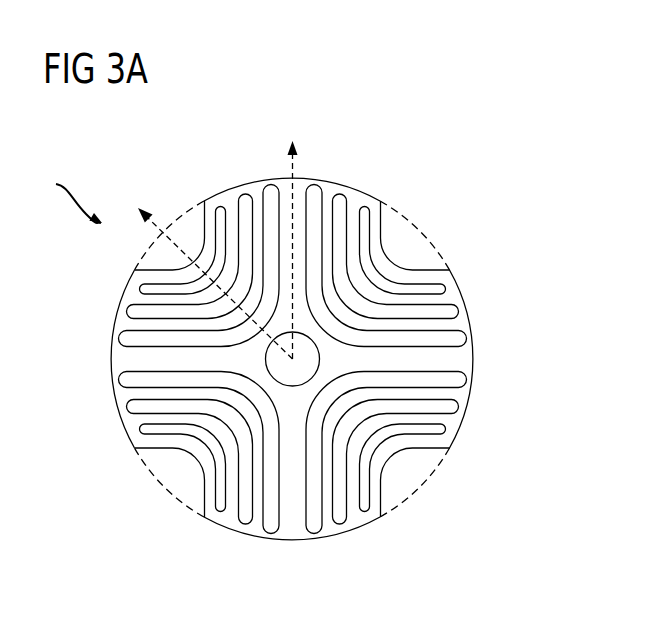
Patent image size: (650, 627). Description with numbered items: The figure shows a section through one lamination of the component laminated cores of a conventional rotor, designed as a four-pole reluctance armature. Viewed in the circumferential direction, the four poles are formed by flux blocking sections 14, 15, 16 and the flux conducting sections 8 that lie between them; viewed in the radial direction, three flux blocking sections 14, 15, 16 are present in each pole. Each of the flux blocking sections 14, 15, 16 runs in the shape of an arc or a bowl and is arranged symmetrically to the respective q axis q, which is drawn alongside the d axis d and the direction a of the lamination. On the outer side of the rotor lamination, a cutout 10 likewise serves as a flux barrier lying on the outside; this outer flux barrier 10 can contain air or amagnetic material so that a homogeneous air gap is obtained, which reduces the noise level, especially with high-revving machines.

The flux conducting section 8 is at (233, 226).
The cutout 10 is at (192, 226).
The flux blocking section 14 is at (150, 288).
The flux blocking section 15 is at (138, 312).
The flux blocking section 16 is at (128, 338).
The axis a is at (72, 196).
The q axis q is at (208, 271).
The axis d is at (294, 235).